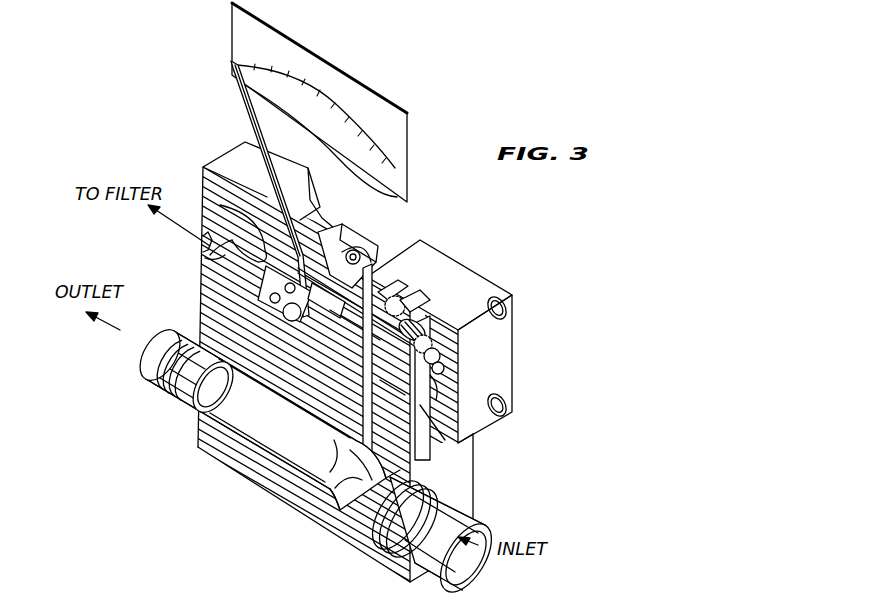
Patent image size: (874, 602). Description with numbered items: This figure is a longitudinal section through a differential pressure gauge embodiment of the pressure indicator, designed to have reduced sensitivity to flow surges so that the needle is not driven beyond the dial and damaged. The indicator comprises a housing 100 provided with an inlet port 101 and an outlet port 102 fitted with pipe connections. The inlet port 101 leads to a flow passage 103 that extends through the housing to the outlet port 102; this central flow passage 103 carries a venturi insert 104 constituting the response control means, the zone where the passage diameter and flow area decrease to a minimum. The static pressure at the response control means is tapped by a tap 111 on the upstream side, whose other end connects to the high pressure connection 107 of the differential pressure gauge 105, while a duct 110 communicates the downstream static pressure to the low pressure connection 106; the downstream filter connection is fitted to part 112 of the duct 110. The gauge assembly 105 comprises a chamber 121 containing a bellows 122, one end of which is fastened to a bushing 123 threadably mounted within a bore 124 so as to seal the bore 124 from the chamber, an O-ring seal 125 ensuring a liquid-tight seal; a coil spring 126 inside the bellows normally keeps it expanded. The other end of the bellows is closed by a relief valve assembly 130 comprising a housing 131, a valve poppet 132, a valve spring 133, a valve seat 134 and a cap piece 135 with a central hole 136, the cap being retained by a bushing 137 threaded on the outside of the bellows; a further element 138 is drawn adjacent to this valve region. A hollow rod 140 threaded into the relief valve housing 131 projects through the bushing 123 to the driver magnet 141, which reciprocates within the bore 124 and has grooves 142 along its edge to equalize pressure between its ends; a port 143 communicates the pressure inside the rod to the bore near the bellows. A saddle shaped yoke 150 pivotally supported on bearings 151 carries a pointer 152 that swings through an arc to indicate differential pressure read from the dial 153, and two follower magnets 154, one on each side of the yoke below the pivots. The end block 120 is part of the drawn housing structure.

The housing 100 is at (368, 545).
The inlet port 101 is at (442, 515).
The outlet port 102 is at (178, 385).
The flow passage 103 is at (280, 468).
The venturi insert 104 is at (338, 505).
The differential pressure gauge 105 is at (194, 73).
The low pressure connection 106 is at (265, 197).
The high pressure connection 107 is at (306, 372).
The duct 110 is at (212, 256).
The static pressure tap 111 is at (364, 400).
The part of duct 112 is at (205, 242).
The end block 120 is at (508, 366).
The chamber 121 is at (412, 405).
The bellows 122 is at (440, 336).
The bushing 123 is at (412, 306).
The bore 124 is at (258, 242).
The O-ring seal 125 is at (388, 296).
The coil spring 126 is at (426, 322).
The relief valve assembly 130 is at (445, 388).
The relief valve housing 131 is at (445, 349).
The valve poppet 132 is at (412, 395).
The valve spring 133 is at (376, 376).
The valve seat 134 is at (430, 410).
The cap piece 135 is at (443, 364).
The central hole 136 is at (438, 386).
The bushing 137 is at (438, 440).
The diaphragm 138 is at (420, 430).
The hollow rod 140 is at (372, 354).
The driver magnet 141 is at (300, 325).
The grooves 142 is at (352, 252).
The port 143 is at (328, 312).
The saddle shaped yoke 150 is at (333, 230).
The bearings 151 is at (270, 298).
The pointer 152 is at (252, 145).
The dial 153 is at (381, 97).
The follower magnets 154 is at (366, 268).